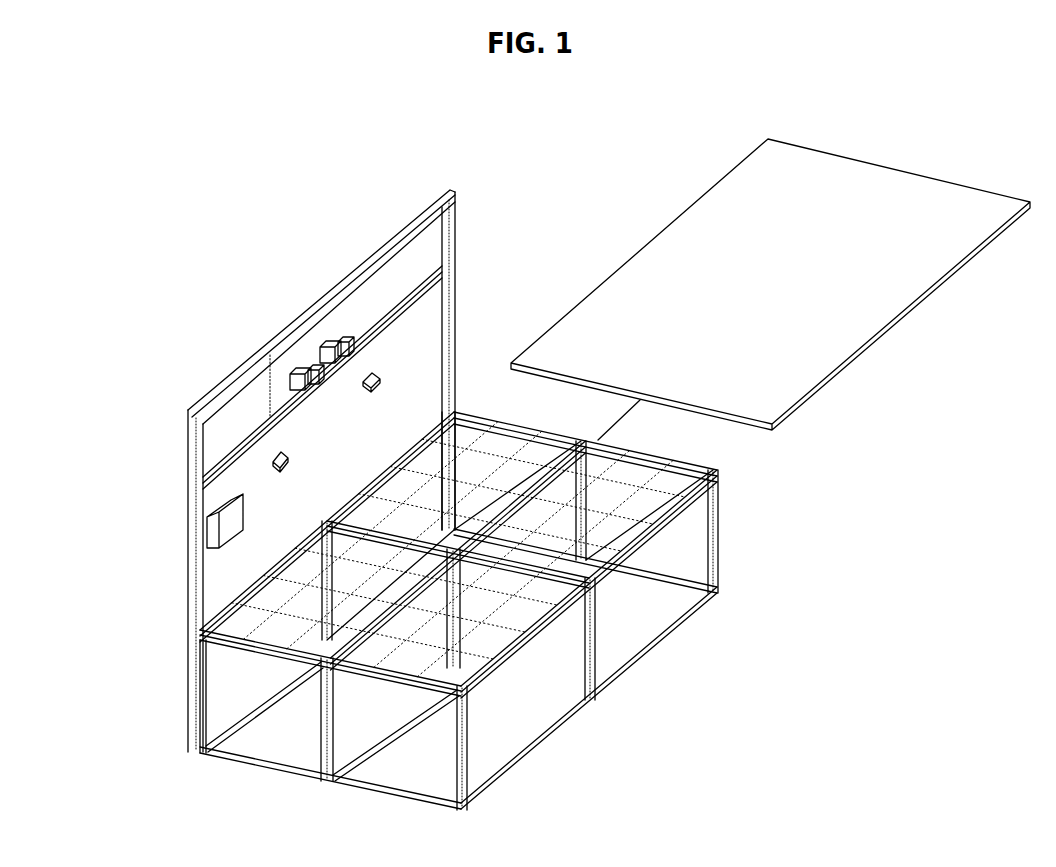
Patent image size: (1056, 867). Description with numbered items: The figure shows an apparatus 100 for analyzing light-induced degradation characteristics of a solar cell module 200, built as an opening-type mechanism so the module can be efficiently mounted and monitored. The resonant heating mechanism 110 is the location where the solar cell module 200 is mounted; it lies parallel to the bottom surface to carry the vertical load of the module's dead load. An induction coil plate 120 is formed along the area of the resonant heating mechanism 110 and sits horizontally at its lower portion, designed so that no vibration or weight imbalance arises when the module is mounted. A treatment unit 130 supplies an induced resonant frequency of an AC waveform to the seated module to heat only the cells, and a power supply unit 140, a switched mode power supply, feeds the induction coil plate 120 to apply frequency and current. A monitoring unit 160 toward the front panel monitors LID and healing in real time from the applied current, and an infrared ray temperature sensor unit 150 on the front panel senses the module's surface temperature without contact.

The apparatus for analyzing LID characteristics of a solar cell module 100 is at (578, 156).
The resonant heating mechanism 110 is at (497, 667).
The induction coil plate 120 is at (458, 549).
The treatment unit 130 is at (140, 521).
The power supply unit 140 is at (140, 521).
The infrared ray temperature sensor unit 150 is at (207, 522).
The monitoring unit 160 is at (240, 400).
The solar cell module 200 is at (873, 322).